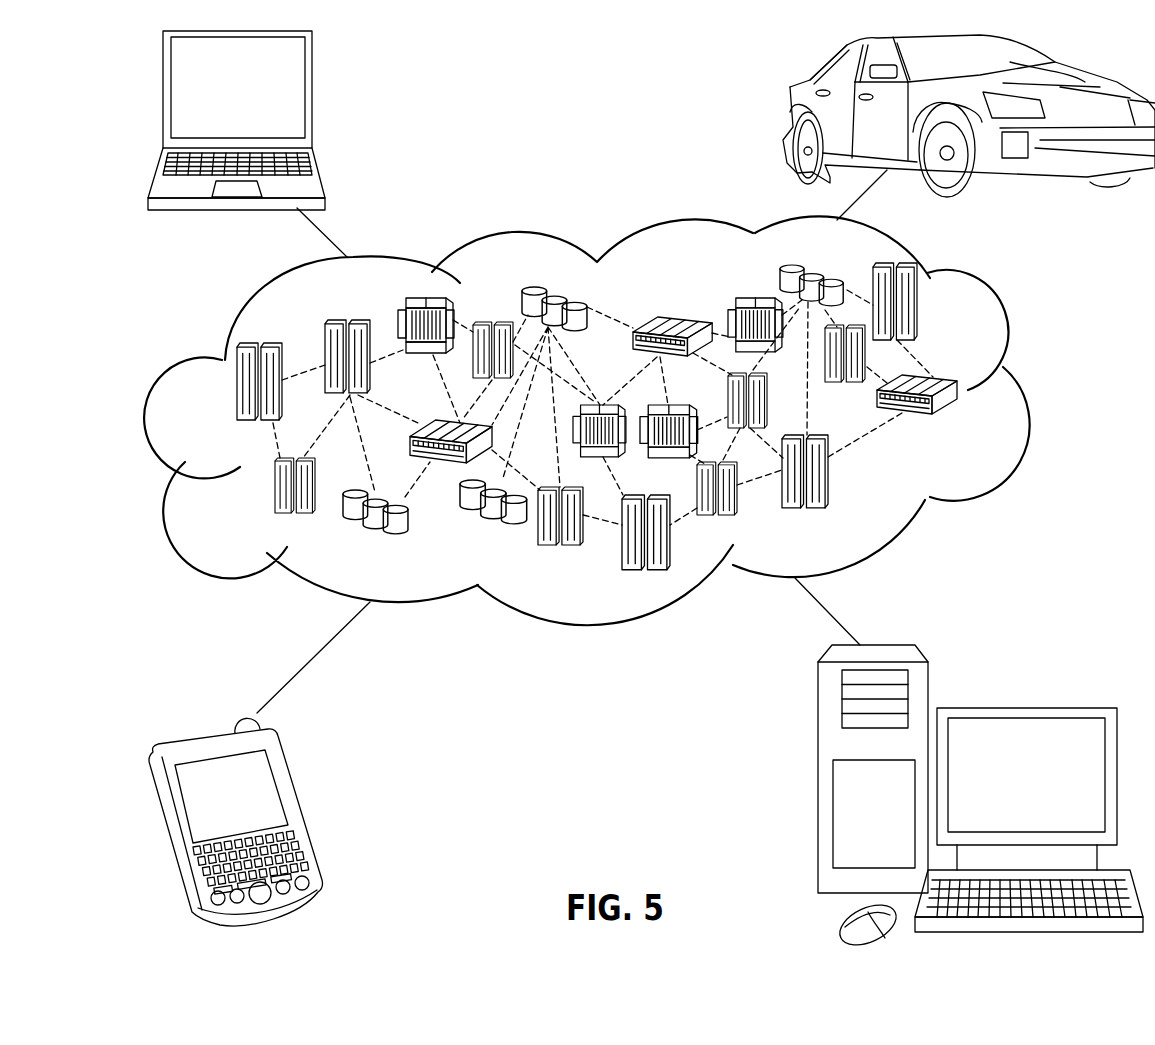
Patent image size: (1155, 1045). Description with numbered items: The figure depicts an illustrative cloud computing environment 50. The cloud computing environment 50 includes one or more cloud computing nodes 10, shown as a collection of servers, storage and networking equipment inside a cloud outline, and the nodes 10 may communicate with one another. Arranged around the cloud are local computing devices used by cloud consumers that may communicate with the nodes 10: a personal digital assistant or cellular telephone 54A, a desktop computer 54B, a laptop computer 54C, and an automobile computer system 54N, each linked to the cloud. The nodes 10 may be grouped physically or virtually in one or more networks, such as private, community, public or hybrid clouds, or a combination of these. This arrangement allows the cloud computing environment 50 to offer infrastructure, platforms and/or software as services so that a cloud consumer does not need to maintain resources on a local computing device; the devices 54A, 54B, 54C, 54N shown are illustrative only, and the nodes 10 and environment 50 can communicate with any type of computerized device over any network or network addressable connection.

The cloud computing node 10 is at (960, 428).
The cloud computing environment 50 is at (620, 420).
The personal digital assistant or cellular telephone 54A is at (300, 808).
The desktop computer 54B is at (1020, 708).
The laptop computer 54C is at (312, 97).
The automobile computer system 54N is at (785, 115).